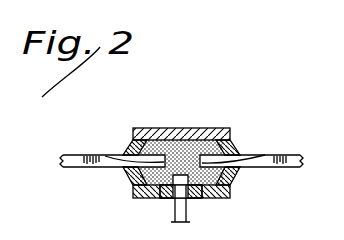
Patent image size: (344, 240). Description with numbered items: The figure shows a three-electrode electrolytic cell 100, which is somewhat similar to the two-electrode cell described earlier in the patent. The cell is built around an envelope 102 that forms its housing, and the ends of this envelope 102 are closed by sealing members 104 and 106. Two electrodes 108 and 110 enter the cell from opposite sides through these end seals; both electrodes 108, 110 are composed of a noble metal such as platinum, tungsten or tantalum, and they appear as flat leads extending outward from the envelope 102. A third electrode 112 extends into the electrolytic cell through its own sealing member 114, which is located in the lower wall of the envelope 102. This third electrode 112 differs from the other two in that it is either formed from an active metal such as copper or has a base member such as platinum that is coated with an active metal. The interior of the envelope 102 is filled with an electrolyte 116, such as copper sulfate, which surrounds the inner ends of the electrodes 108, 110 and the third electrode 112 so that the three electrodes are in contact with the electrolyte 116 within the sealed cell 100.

The three-electrode electrolytic cell 100 is at (183, 119).
The envelope 102 is at (208, 134).
The sealing member 104 is at (238, 172).
The sealing member 106 is at (128, 177).
The electrode 108 is at (236, 154).
The electrode 110 is at (112, 155).
The third electrode 112 is at (188, 216).
The sealing member 114 is at (163, 198).
The electrolyte 116 is at (134, 141).